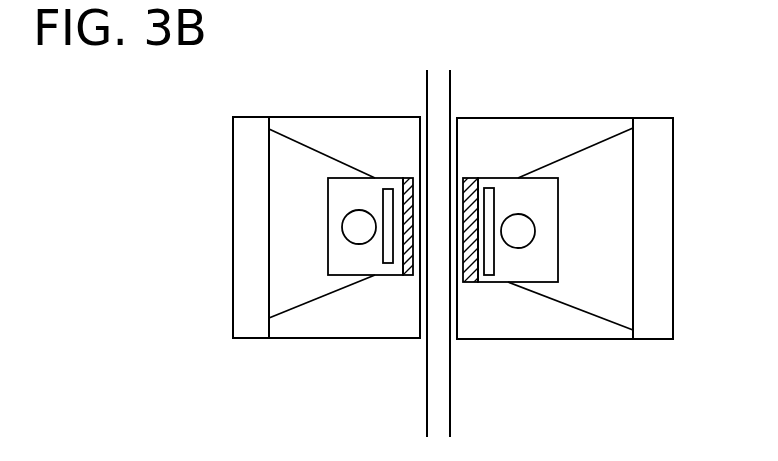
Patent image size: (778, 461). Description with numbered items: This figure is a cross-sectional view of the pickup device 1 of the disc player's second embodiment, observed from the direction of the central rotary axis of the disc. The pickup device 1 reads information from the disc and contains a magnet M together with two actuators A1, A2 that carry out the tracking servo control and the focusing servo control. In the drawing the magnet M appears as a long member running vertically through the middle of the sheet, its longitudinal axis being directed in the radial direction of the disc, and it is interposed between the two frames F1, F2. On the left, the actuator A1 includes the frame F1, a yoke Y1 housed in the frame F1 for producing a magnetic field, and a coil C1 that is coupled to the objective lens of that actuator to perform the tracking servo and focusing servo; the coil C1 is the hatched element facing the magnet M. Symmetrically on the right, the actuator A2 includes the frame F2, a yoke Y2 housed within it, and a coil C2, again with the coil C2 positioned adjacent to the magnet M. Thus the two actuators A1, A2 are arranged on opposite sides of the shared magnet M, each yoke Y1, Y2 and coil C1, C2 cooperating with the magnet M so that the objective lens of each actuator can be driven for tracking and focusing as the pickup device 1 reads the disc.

The pickup device 1 is at (673, 160).
The magnet M is at (450, 70).
The frame F1 is at (299, 339).
The frame F2 is at (556, 339).
The actuator A1 is at (328, 208).
The actuator A2 is at (558, 198).
The yoke Y1 is at (388, 263).
The yoke Y2 is at (490, 275).
The coil C1 is at (406, 178).
The coil C2 is at (470, 178).